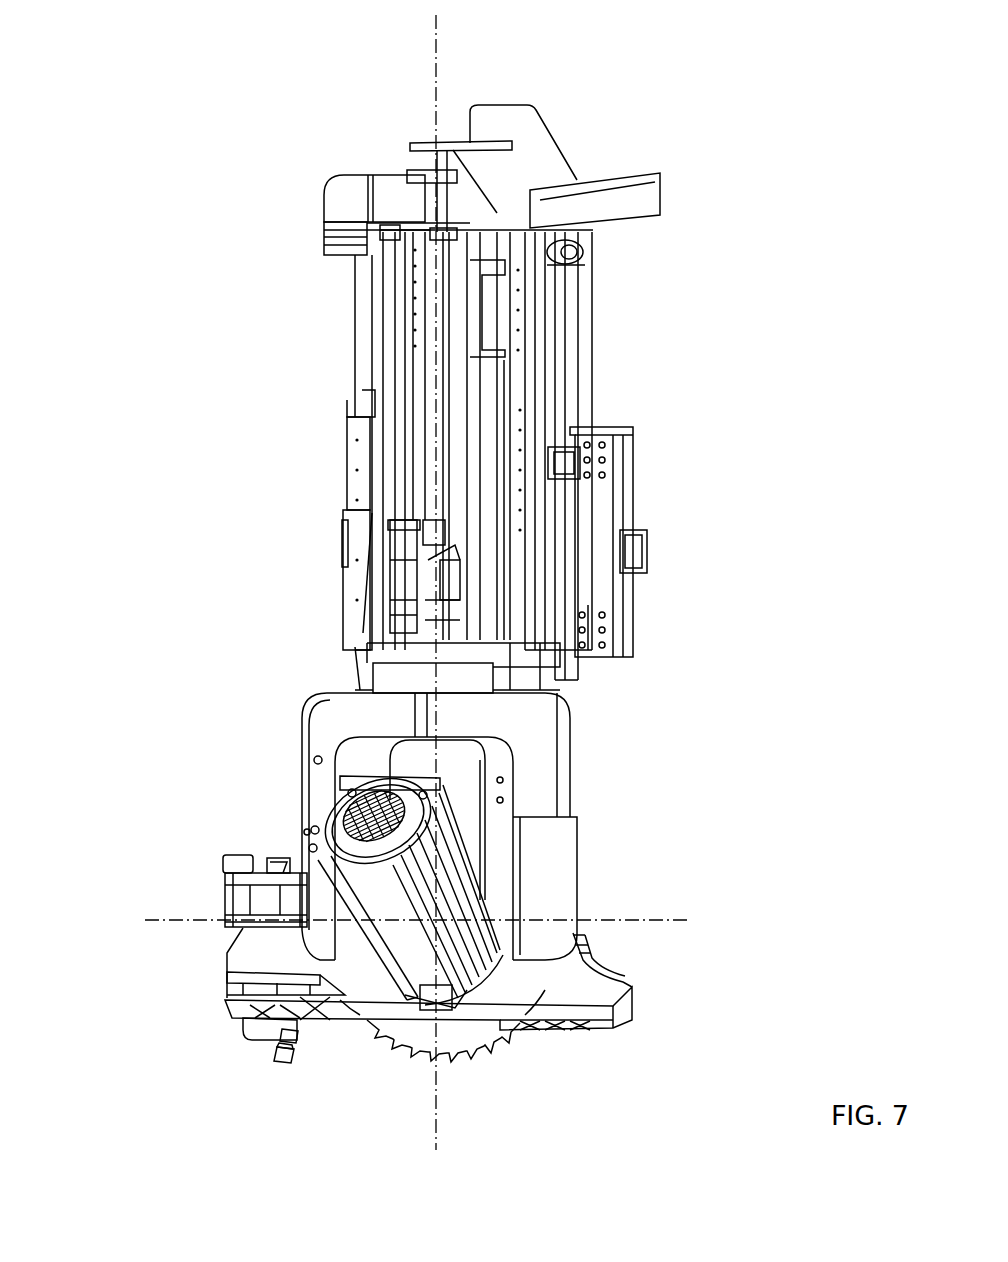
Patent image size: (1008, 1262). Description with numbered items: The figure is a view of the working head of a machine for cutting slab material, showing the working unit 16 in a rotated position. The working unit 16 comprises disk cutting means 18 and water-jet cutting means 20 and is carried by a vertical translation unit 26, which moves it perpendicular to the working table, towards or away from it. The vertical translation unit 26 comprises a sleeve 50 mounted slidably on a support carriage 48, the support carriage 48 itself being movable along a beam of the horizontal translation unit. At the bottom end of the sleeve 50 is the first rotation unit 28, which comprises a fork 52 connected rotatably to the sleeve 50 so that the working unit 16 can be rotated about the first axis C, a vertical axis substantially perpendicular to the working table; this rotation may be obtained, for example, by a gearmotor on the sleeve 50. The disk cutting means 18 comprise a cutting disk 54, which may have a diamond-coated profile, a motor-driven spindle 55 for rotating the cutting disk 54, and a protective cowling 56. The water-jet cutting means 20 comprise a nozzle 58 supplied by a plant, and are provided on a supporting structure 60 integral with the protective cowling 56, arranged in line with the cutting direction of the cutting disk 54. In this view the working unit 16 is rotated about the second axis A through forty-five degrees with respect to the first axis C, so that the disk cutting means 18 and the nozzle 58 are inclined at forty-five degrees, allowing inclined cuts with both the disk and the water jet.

The working unit 16 is at (624, 976).
The disk cutting means 18 is at (499, 1060).
The water-jet cutting means 20 is at (235, 1032).
The vertical translation unit 26 is at (350, 318).
The first rotation unit 28 is at (381, 712).
The support carriage 48 is at (623, 597).
The sleeve 50 is at (595, 330).
The fork 52 is at (568, 768).
The cutting disk 54 is at (410, 1060).
The motor-driven spindle 55 is at (477, 870).
The protective cowling 56 is at (593, 1030).
The nozzle 58 is at (287, 1063).
The supporting structure 60 is at (237, 955).
The first axis C is at (437, 48).
The second axis A is at (668, 930).